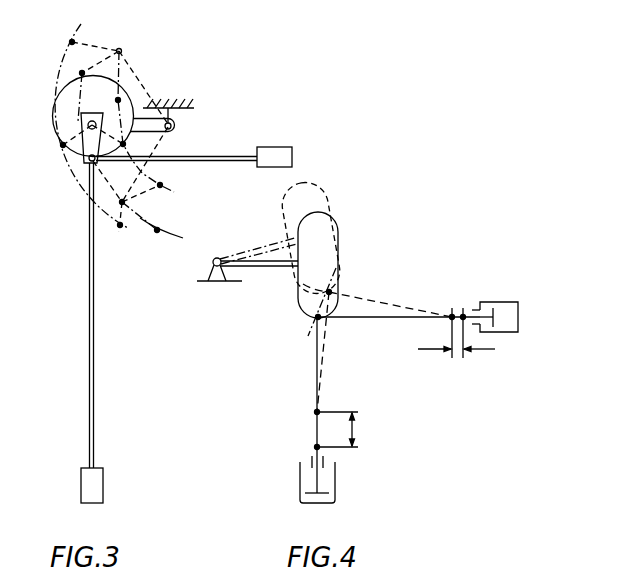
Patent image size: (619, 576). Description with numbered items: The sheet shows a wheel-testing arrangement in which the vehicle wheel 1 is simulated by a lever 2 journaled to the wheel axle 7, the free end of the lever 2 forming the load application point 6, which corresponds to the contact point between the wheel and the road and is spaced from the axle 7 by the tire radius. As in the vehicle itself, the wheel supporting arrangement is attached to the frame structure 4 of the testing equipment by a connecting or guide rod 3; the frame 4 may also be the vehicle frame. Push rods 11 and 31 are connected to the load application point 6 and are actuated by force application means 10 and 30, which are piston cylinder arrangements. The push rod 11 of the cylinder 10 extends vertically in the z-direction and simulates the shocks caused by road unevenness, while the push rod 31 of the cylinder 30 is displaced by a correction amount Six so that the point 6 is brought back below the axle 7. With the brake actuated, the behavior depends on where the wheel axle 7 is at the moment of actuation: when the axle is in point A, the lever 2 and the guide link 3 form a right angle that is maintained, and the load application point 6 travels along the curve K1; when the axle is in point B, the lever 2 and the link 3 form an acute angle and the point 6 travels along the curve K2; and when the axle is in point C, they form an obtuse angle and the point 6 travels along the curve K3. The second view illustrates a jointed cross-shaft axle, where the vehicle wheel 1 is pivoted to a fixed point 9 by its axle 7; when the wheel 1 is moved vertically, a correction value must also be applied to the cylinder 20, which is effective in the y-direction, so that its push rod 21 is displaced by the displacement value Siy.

In FIG. 3, the vehicle wheel 1 is at (56, 108).
In FIG. 4, the vehicle wheel 1 is at (330, 237).
In FIG. 3, the lever 2 is at (78, 151).
In FIG. 3, the guide rod 3 is at (173, 123).
In FIG. 3, the frame structure 4 is at (187, 106).
In FIG. 3, the load application point 6 is at (83, 175).
In FIG. 3, the wheel axle 7 is at (85, 125).
In FIG. 4, the wheel axle 7 is at (266, 268).
In FIG. 4, the fixed point 9 is at (235, 287).
In FIG. 3, the force application means 10 is at (81, 477).
In FIG. 4, the force application means 10 is at (331, 486).
In FIG. 3, the push rod 11 is at (89, 371).
In FIG. 4, the force application means 20 is at (507, 302).
In FIG. 4, the push rod 21 is at (390, 322).
In FIG. 3, the force application means 30 is at (268, 147).
In FIG. 3, the push rod 31 is at (216, 155).
In FIG. 3, the point A is at (97, 117).
In FIG. 3, the point B is at (127, 46).
In FIG. 3, the point C is at (120, 190).
In FIG. 3, the curve K1 is at (158, 232).
In FIG. 3, the curve K2 is at (125, 144).
In FIG. 3, the curve K3 is at (86, 124).
In FIG. 4, the displacement value Six is at (353, 430).
In FIG. 4, the displacement value Siy is at (456, 348).